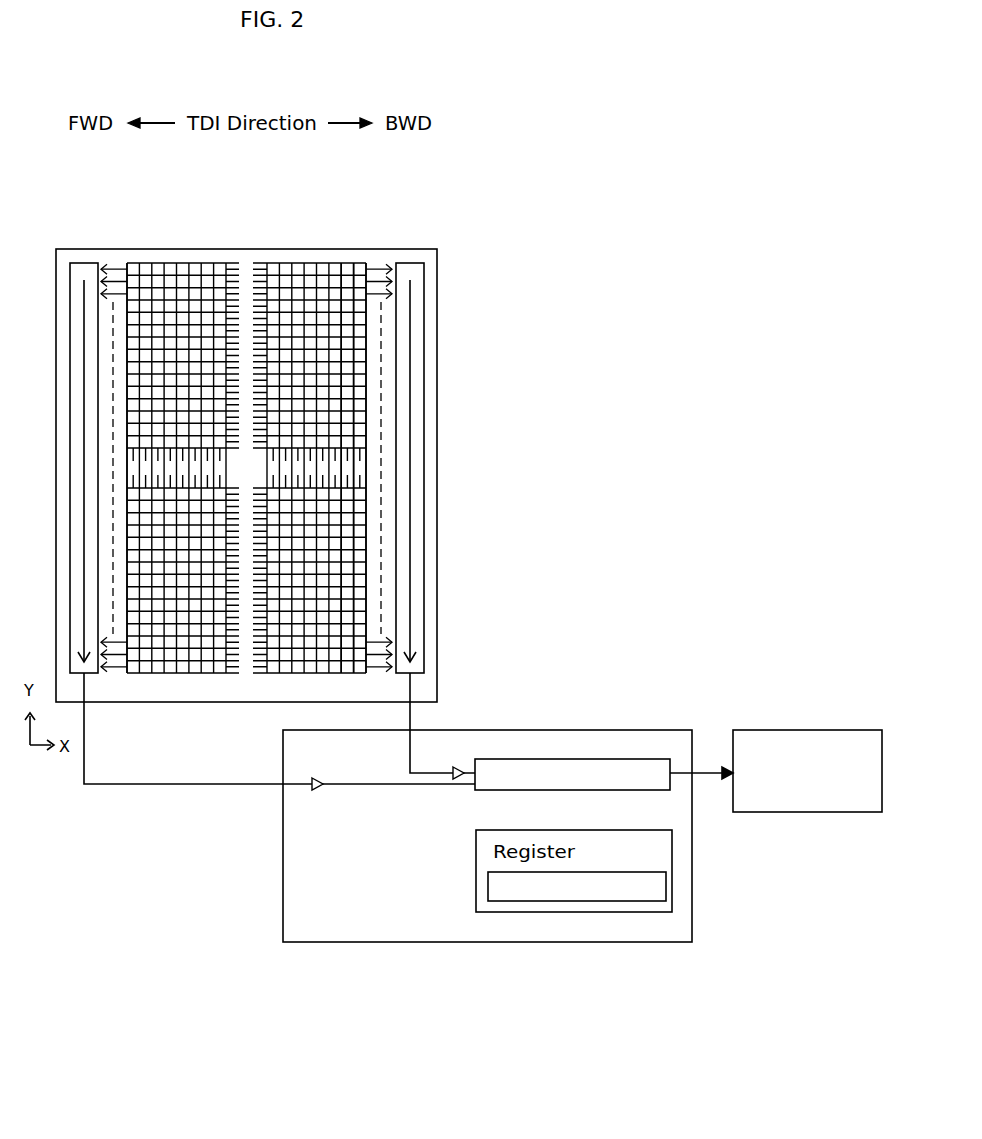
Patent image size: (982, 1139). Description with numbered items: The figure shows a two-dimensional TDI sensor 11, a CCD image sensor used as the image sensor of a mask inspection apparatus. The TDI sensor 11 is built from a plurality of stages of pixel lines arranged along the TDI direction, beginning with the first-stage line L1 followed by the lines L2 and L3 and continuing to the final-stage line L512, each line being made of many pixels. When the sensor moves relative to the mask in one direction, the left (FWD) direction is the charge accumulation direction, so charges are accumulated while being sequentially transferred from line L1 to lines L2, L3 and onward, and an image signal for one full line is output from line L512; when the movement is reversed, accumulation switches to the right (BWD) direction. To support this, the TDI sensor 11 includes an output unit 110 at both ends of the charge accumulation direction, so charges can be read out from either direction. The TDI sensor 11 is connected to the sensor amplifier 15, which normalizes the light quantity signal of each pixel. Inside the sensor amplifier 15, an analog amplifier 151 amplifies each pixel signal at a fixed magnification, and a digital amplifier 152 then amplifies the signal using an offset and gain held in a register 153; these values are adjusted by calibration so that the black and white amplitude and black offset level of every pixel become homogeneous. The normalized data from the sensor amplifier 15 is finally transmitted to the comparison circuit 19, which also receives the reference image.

The TDI sensor 11 is at (425, 249).
The output unit 110 is at (83, 263).
The line L512 is at (130, 262).
The line L3 is at (328, 263).
The line L2 is at (347, 263).
The line L1 is at (365, 263).
The sensor amplifier 15 is at (283, 876).
The analog amplifier 151 is at (458, 767).
The digital amplifier 152 is at (588, 759).
The register 153 is at (597, 912).
The comparison circuit 19 is at (797, 812).